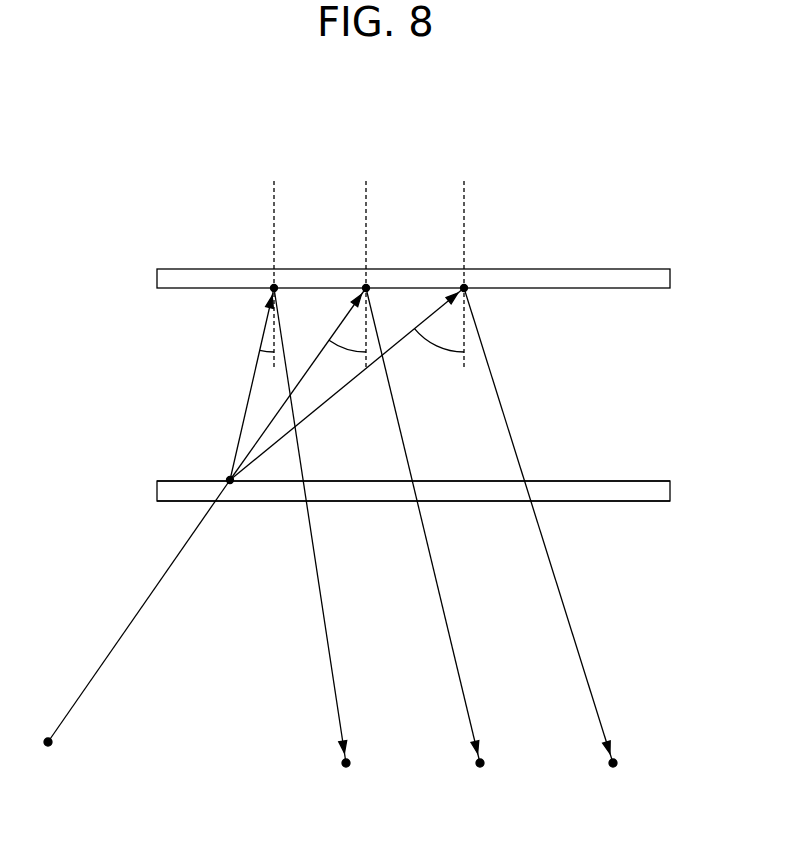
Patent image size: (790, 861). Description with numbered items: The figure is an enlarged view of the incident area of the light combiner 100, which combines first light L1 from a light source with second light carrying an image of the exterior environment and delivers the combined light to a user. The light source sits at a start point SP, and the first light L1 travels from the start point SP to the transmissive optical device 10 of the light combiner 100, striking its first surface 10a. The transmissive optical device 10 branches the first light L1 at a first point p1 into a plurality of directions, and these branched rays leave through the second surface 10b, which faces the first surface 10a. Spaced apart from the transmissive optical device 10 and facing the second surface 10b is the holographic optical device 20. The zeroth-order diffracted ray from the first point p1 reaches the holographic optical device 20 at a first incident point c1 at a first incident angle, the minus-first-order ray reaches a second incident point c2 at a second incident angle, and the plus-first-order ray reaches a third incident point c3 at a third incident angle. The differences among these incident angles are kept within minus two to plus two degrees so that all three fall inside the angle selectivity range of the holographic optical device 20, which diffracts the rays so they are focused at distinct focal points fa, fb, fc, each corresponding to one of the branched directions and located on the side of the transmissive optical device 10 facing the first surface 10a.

The light combiner 100 is at (573, 195).
The holographic optical device 20 is at (670, 279).
The transmissive optical device 10 is at (670, 491).
The first surface 10a is at (626, 501).
The second surface 10b is at (626, 481).
The first incident point c1 is at (364, 286).
The second incident point c2 is at (272, 286).
The third incident point c3 is at (462, 286).
The first point p1 is at (227, 478).
The first light L1 is at (134, 615).
The start point SP is at (47, 750).
The first focal point fa is at (480, 770).
The second focal point fb is at (346, 770).
The third focal point fc is at (613, 770).